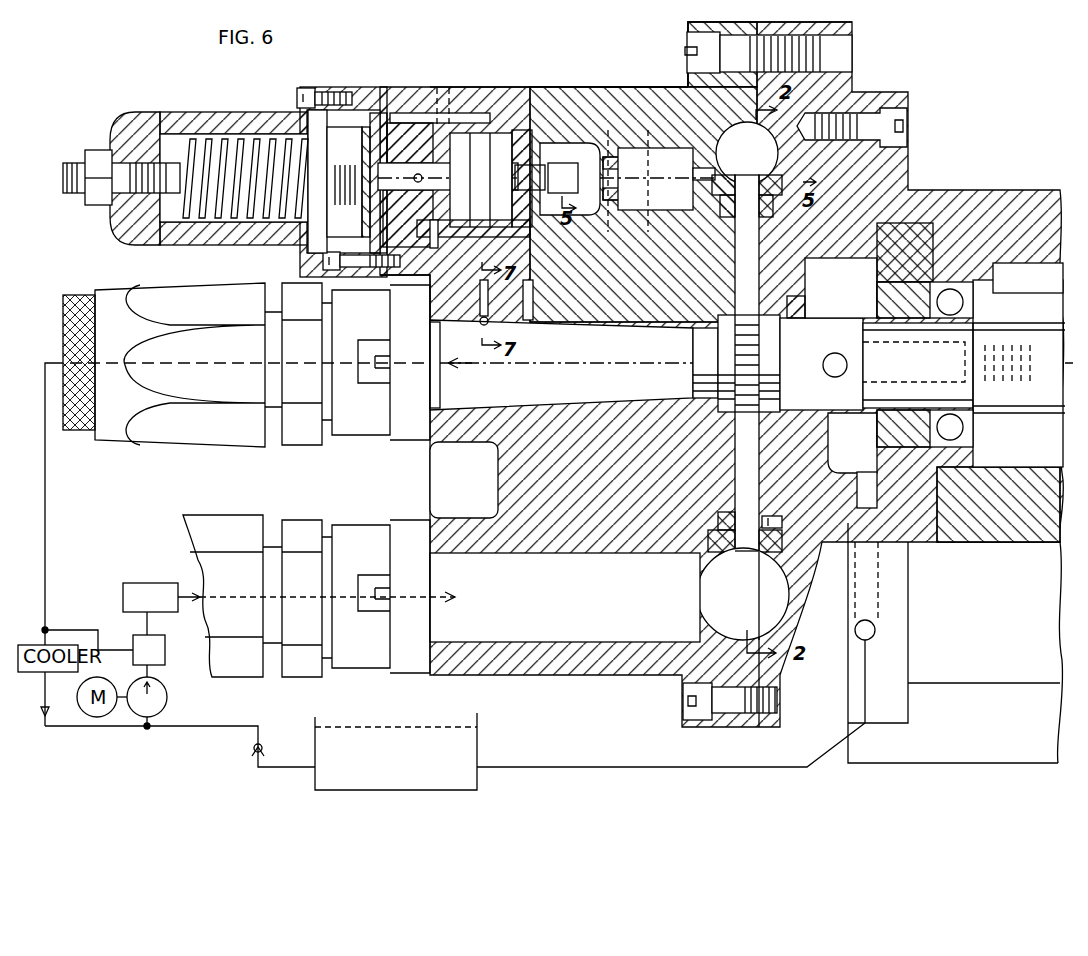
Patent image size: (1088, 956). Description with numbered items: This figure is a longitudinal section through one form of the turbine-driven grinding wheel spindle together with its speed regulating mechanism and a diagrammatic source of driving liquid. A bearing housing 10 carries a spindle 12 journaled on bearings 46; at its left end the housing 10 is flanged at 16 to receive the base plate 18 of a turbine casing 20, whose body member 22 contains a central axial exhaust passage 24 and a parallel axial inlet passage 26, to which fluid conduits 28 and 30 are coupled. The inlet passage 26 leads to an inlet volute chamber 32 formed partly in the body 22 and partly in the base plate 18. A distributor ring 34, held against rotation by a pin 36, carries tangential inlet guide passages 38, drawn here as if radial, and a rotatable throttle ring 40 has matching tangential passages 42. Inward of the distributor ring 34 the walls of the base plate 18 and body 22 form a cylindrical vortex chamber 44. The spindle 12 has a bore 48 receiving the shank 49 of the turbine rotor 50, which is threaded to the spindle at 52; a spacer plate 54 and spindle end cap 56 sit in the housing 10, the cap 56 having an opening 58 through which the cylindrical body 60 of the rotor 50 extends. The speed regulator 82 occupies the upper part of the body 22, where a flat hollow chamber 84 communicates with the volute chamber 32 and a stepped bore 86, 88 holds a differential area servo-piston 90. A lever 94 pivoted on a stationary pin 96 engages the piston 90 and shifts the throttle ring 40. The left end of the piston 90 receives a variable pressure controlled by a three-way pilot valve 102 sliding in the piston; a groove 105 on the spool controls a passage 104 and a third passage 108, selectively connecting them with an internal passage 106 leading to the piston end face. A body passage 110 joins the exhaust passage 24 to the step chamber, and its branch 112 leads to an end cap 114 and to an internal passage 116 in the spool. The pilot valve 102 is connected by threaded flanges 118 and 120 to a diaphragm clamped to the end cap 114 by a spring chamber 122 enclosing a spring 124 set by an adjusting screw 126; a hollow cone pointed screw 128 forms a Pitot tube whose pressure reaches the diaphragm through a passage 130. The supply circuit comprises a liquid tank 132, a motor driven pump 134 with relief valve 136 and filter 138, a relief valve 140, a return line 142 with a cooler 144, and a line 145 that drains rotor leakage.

The bearing housing 10 is at (985, 205).
The spindle 12 is at (1012, 322).
The flange 16 is at (905, 140).
The base plate 18 is at (852, 62).
The turbine casing 20 is at (627, 63).
The body member 22 is at (590, 100).
The exhaust passage 24 is at (571, 365).
The inlet passage 26 is at (450, 597).
The fluid conduit 28 is at (82, 432).
The fluid conduit 30 is at (225, 520).
The inlet volute chamber 32 is at (743, 594).
The distributor ring 34 is at (710, 530).
The pin 36 is at (782, 515).
The inlet guide passage 38 is at (760, 210).
The throttle ring 40 is at (735, 553).
The tangential passage 42 is at (747, 153).
The vortex chamber 44 is at (746, 451).
The bearings 46 is at (960, 300).
The bore 48 is at (905, 342).
The shank 49 is at (950, 390).
The turbine rotor 50 is at (718, 408).
The threaded engagement 52 is at (1030, 357).
The spacer plate 54 is at (841, 383).
The spindle end cap 56 is at (830, 262).
The opening 58 is at (830, 304).
The cylindrical body 60 is at (821, 364).
The speed regulator 82 is at (449, 70).
The hollow chamber 84 is at (657, 178).
The stepped bore 86 is at (570, 150).
The stepped bore 88 is at (522, 130).
The servo-piston 90 is at (475, 133).
The lever 94 is at (640, 200).
The pin 96 is at (640, 110).
The pilot valve 102 is at (610, 150).
The passage 104 is at (520, 230).
The groove 105 is at (567, 178).
The internal passage 106 is at (540, 165).
The third passage 108 is at (436, 248).
The body passage 110 is at (543, 320).
The branch 112 is at (430, 282).
The end cap 114 is at (405, 88).
The internal passage 116 is at (352, 92).
The threaded flange 118 is at (348, 182).
The threaded flange 120 is at (375, 142).
The spring chamber 122 is at (275, 113).
The spring 124 is at (215, 140).
The adjusting screw 126 is at (72, 162).
The hollow cone pointed screw 128 is at (436, 330).
The passage 130 is at (457, 110).
The liquid tank 132 is at (396, 751).
The pump 134 is at (167, 700).
The relief valve 136 is at (160, 636).
The filter 138 is at (160, 562).
The relief valve 140 is at (226, 594).
The return line 142 is at (45, 495).
The cooler 144 is at (45, 630).
The line 145 is at (558, 767).